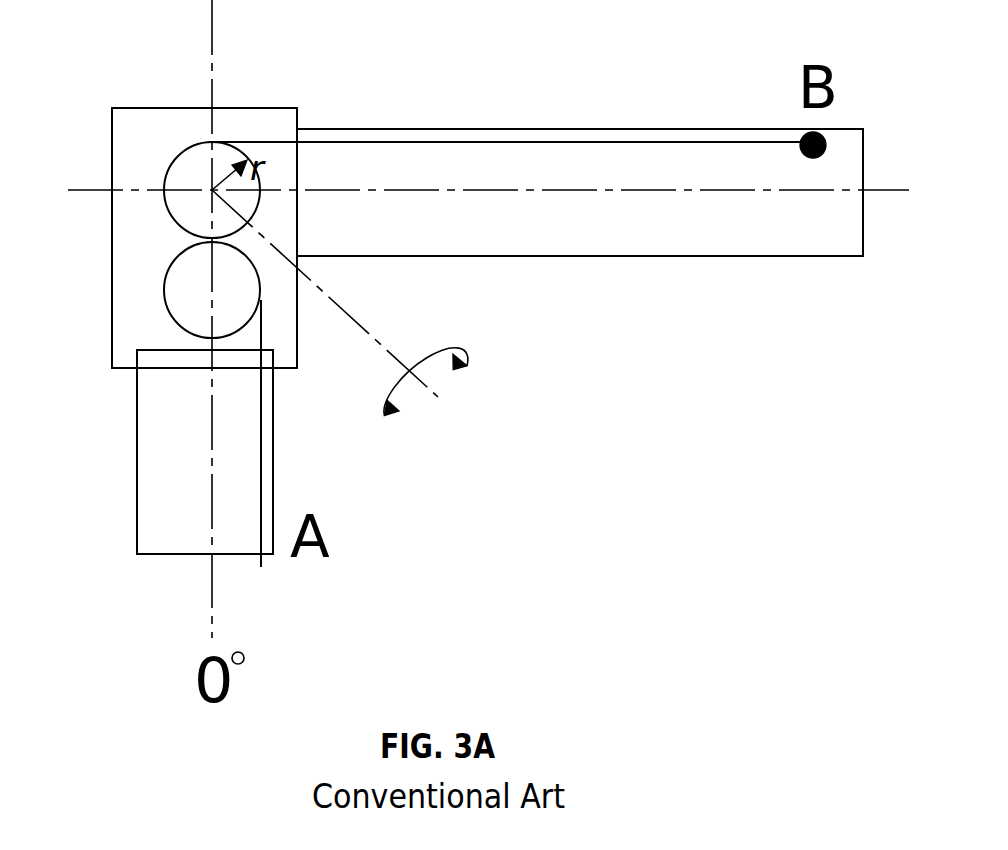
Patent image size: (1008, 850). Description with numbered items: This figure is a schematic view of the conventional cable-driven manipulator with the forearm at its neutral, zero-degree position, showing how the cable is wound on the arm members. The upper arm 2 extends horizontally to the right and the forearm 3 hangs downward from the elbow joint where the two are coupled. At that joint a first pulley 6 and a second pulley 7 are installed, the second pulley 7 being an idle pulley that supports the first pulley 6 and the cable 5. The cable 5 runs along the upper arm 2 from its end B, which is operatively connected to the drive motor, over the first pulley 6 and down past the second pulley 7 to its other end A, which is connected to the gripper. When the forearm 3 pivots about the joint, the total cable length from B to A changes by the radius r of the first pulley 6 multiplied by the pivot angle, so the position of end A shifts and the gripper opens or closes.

The upper arm 2 is at (559, 129).
The forearm 3 is at (136, 454).
The cable 5 is at (683, 142).
The first pulley 6 is at (180, 155).
The second pulley 7 is at (164, 293).